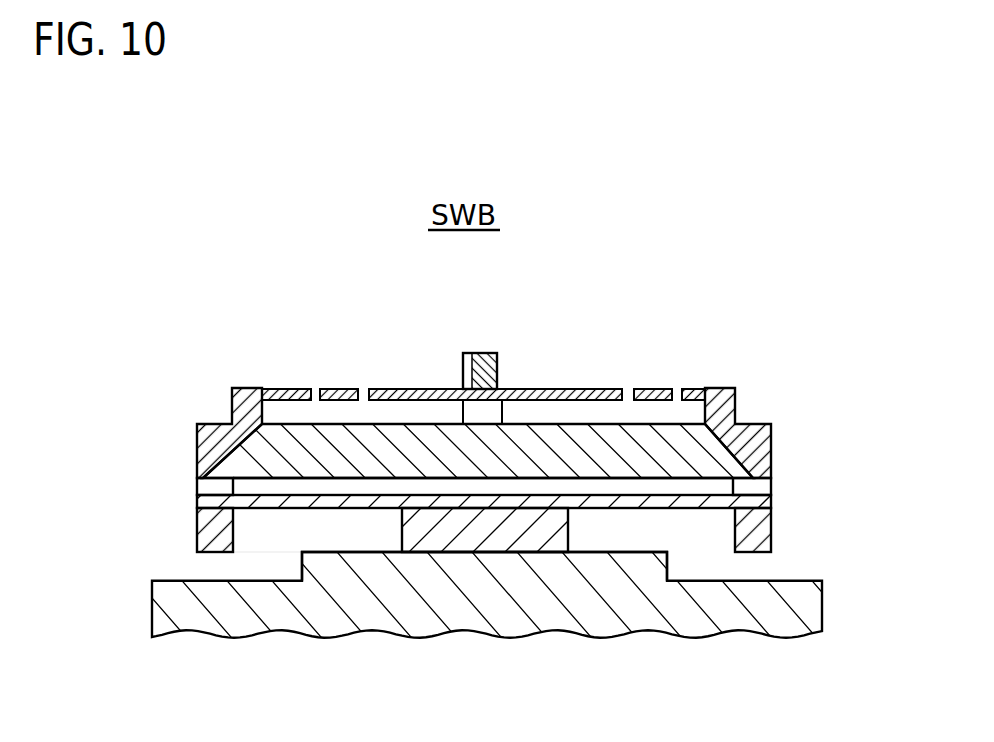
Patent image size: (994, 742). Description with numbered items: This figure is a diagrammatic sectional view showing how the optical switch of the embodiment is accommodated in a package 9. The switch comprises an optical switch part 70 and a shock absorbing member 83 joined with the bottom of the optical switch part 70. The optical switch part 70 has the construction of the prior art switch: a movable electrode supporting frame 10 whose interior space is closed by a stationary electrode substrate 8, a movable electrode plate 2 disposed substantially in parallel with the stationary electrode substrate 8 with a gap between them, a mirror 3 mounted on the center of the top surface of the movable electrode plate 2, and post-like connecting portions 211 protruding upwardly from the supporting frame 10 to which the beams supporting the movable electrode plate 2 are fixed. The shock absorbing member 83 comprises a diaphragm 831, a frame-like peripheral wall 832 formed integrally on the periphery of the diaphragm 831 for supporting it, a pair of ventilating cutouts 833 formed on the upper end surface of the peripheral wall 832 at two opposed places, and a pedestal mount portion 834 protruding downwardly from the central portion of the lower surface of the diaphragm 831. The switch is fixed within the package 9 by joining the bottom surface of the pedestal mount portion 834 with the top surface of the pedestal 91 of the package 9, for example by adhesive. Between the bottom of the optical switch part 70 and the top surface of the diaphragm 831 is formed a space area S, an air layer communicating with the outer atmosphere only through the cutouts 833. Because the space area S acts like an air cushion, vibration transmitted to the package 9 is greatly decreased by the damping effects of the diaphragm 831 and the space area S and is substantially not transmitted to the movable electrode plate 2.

The movable electrode plate 2 is at (550, 390).
The connecting portion 211 is at (250, 388).
The mirror 3 is at (485, 355).
The stationary electrode substrate 8 is at (417, 428).
The movable electrode supporting frame 10 is at (197, 440).
The optical switch part 70 is at (778, 410).
The shock absorbing member 83 is at (190, 525).
The diaphragm 831 is at (645, 510).
The frame-like peripheral wall 832 is at (197, 543).
The ventilating cutouts 833 is at (197, 488).
The pedestal mount portion 834 is at (413, 520).
The package 9 is at (622, 625).
The pedestal 91 is at (365, 563).
The space area S is at (470, 490).